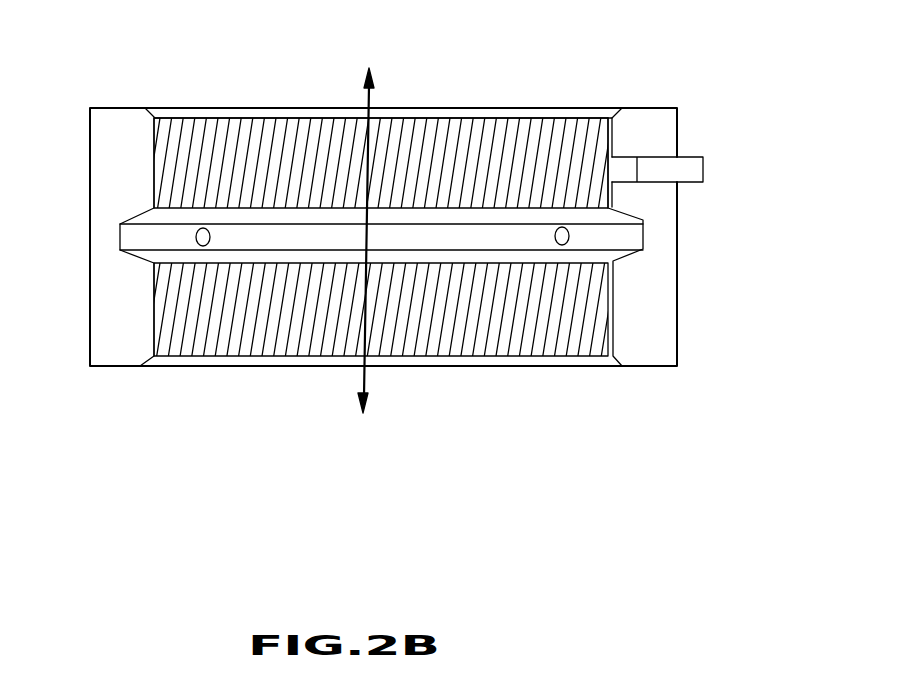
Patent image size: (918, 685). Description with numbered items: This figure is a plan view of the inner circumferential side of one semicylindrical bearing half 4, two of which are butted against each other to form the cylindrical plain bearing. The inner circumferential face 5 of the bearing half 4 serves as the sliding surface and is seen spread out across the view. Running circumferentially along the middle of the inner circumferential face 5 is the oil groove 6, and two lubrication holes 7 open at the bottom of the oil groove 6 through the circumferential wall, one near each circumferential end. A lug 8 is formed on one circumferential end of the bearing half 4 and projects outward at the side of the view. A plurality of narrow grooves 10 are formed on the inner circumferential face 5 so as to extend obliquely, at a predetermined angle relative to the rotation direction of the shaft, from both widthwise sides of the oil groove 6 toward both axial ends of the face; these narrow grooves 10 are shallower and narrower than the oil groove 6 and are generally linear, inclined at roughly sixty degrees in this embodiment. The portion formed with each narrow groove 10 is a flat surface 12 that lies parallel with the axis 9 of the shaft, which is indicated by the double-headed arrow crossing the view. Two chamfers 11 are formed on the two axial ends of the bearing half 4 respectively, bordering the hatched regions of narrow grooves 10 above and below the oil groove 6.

The bearing half 4 is at (545, 108).
The inner circumferential face 5 is at (488, 120).
The oil groove 6 is at (508, 234).
The lubrication hole 7 is at (196, 237).
The lug 8 is at (693, 170).
The axis 9 is at (357, 382).
The narrow groove 10 is at (405, 120).
The chamfer 11 is at (294, 107).
The flat surface 12 is at (450, 120).